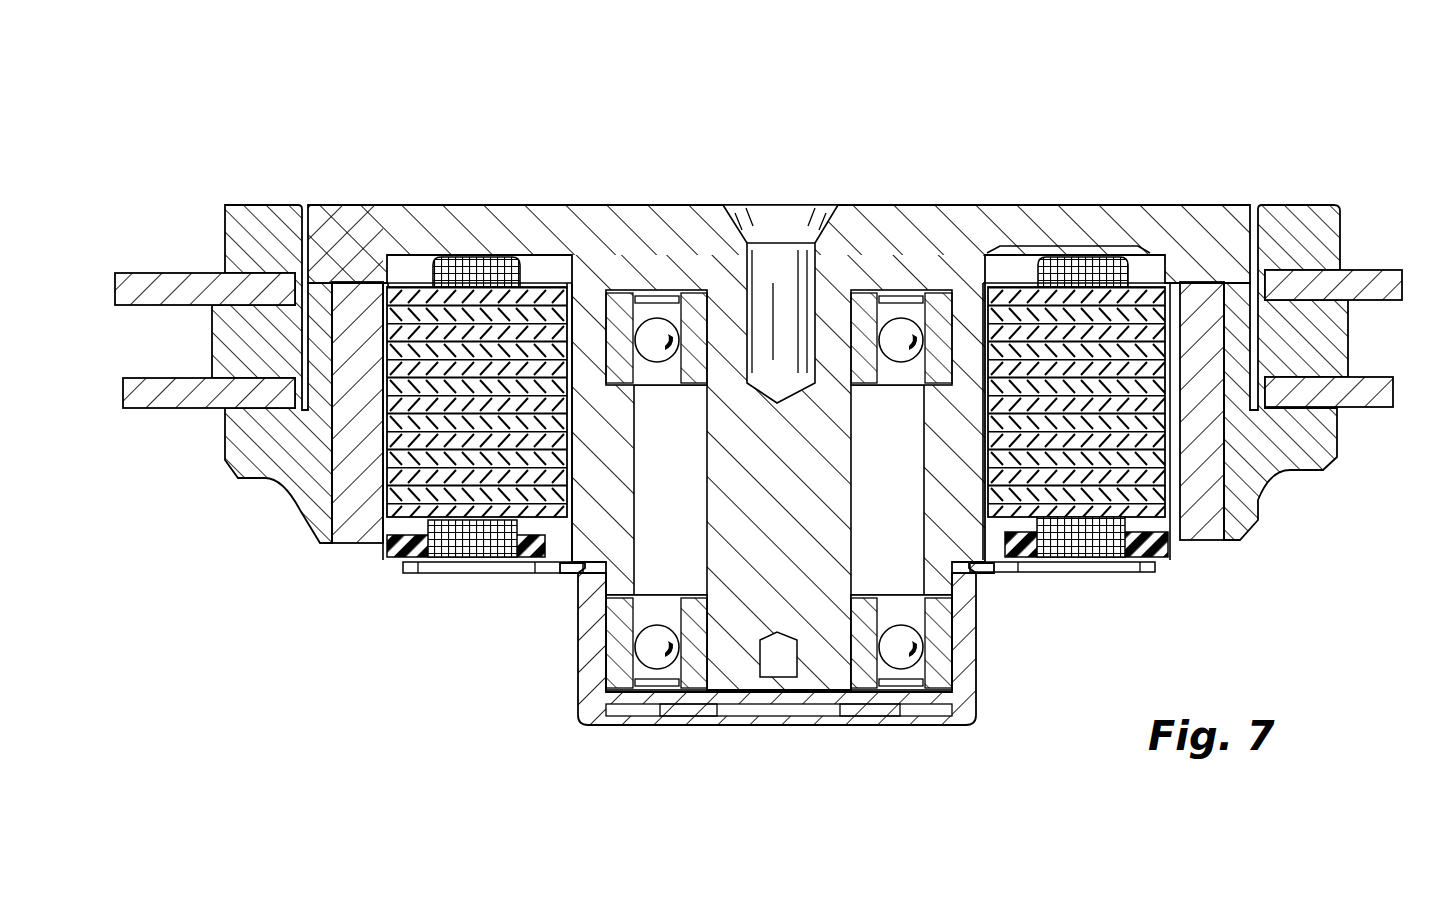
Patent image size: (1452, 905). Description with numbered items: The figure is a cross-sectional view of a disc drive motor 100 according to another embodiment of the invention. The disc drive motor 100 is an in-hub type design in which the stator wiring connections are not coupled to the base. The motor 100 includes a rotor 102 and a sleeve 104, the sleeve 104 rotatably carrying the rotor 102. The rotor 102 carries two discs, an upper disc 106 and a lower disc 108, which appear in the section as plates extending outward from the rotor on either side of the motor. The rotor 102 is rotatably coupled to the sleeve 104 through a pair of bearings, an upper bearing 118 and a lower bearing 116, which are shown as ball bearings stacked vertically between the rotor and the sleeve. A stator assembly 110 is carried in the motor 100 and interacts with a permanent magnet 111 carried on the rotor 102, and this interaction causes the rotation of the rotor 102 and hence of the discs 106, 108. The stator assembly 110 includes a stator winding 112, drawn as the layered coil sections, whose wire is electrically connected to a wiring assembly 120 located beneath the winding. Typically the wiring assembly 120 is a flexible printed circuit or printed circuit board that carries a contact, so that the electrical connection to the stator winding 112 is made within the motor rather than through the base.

The disc drive motor 100 is at (782, 381).
The rotor 102 is at (1035, 205).
The sleeve 104 is at (963, 626).
The disc 106 is at (1370, 270).
The disc 108 is at (1345, 407).
The stator assembly 110 is at (456, 248).
The permanent magnet 111 is at (1200, 534).
The stator winding 112 is at (455, 345).
The bearing 116 is at (895, 610).
The bearing 118 is at (904, 386).
The wiring assembly 120 is at (383, 566).